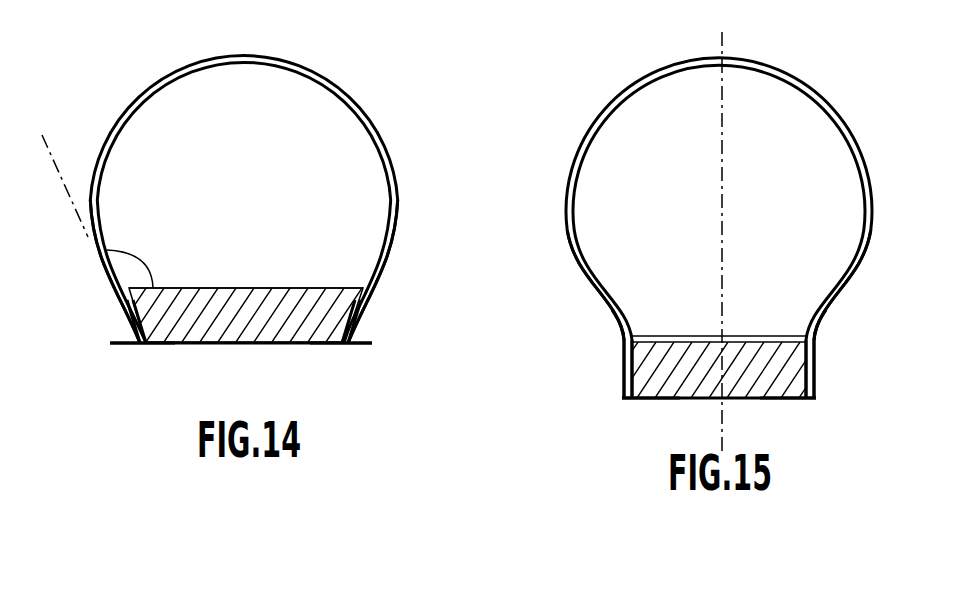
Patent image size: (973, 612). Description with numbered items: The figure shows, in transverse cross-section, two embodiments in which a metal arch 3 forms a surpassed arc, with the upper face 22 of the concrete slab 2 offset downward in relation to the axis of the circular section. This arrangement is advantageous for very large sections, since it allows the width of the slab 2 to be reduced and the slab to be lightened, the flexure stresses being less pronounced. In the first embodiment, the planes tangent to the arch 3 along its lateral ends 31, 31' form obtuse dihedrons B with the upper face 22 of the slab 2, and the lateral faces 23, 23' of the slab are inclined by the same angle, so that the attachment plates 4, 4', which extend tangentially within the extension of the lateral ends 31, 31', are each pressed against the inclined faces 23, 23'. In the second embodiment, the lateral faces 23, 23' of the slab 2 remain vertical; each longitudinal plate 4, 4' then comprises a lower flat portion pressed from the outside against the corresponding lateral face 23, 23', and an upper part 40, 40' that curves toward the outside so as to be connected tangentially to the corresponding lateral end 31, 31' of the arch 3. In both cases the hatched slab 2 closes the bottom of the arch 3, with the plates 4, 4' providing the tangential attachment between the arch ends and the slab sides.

In FIG. 14, the slab 2 is at (287, 288).
In FIG. 15, the slab 2 is at (790, 355).
In FIG. 14, the upper face of the slab 22 is at (215, 288).
In FIG. 14, the lateral face of the slab 23 is at (332, 363).
In FIG. 15, the lateral face of the slab 23 is at (805, 420).
In FIG. 14, the lateral face of the slab 23' is at (157, 361).
In FIG. 15, the lateral face of the slab 23' is at (638, 423).
In FIG. 14, the metal arch 3 is at (243, 199).
In FIG. 15, the metal arch 3 is at (820, 95).
In FIG. 14, the lateral end of the arch 31 is at (394, 271).
In FIG. 15, the lateral end of the arch 31 is at (860, 285).
In FIG. 14, the lateral end of the arch 31' is at (94, 271).
In FIG. 15, the lateral end of the arch 31' is at (567, 285).
In FIG. 14, the attachment plate 4 is at (378, 320).
In FIG. 14, the attachment plate 4' is at (103, 323).
In FIG. 15, the attachment plate 4' is at (725, 370).
In FIG. 15, the upper part of the plate 40 is at (862, 332).
In FIG. 15, the upper part of the plate 40' is at (575, 332).
In FIG. 14, the obtuse dihedron B is at (134, 259).